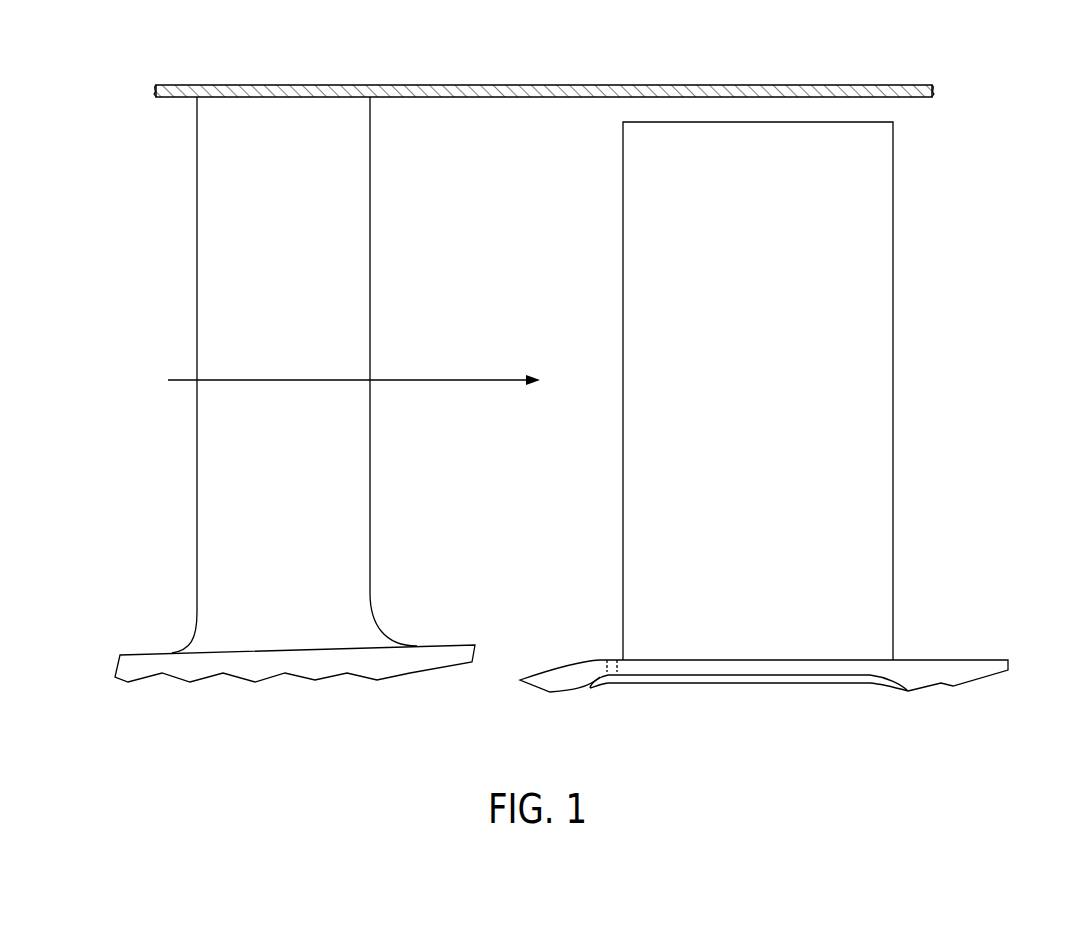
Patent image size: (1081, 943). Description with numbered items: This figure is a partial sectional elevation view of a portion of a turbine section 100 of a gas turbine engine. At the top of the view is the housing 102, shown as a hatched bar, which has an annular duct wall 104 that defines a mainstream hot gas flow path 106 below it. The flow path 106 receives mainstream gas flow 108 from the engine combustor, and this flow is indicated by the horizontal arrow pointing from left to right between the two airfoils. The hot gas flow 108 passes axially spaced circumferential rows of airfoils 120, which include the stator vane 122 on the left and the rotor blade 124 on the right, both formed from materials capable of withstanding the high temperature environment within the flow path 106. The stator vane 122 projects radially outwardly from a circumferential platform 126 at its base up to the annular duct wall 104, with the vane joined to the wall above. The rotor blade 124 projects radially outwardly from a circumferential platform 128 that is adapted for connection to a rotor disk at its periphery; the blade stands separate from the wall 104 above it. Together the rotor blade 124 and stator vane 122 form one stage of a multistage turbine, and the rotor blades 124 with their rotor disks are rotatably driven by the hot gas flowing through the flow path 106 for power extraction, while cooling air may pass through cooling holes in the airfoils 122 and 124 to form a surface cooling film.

The turbine section 100 is at (951, 304).
The housing 102 is at (566, 124).
The annular duct wall 104 is at (544, 101).
The mainstream hot gas flow path 106 is at (473, 118).
The mainstream gas flow 108 is at (447, 380).
The airfoils 120 is at (728, 391).
The stator vane 122 is at (206, 195).
The rotor blade 124 is at (639, 193).
The circumferential platform 126 is at (150, 652).
The circumferential platform 128 is at (950, 658).